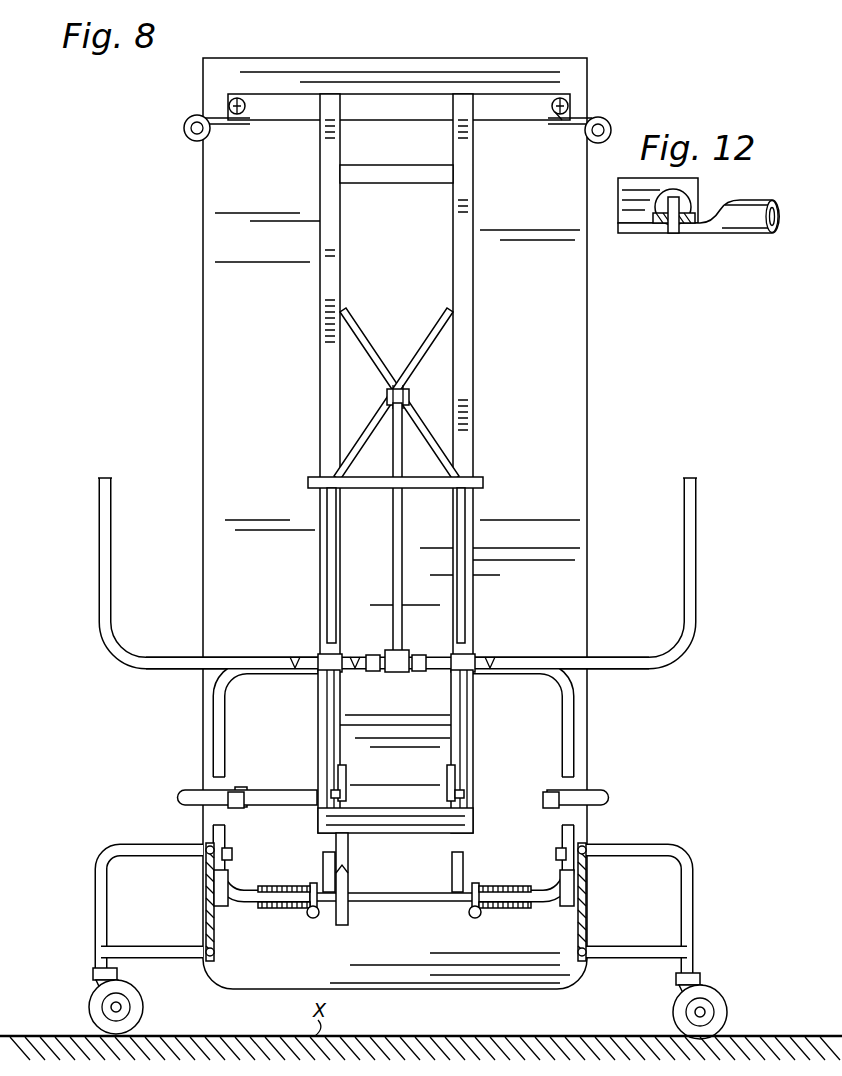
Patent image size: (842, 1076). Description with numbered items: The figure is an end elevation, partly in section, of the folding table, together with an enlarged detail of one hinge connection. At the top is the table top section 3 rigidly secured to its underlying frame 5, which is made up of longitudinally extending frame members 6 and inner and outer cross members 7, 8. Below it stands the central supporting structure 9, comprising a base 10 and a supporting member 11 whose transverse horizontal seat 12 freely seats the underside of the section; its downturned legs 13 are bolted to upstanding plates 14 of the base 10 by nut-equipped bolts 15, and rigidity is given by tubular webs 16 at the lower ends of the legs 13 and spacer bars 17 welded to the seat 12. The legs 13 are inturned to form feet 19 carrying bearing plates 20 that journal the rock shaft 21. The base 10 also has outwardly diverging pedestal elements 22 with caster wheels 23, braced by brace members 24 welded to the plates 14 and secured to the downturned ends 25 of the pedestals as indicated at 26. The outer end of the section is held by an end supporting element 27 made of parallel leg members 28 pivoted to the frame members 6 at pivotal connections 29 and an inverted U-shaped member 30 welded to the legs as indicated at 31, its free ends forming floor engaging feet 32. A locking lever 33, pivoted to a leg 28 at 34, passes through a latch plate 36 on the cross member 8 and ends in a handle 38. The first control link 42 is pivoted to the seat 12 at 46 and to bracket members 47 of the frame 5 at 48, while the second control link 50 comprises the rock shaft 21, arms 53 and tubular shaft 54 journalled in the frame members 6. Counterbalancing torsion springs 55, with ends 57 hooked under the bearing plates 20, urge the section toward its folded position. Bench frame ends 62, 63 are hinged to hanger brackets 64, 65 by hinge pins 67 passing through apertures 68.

In FIG. 8, the table top section 3 is at (565, 392).
In FIG. 8, the underlying frame 5 is at (478, 353).
In FIG. 12, the underlying frame 5 is at (620, 232).
In FIG. 8, the longitudinally extending frame member 6 is at (322, 290).
In FIG. 8, the longitudinally inner cross member 7 is at (385, 175).
In FIG. 8, the longitudinally outer cross member 8 is at (405, 833).
In FIG. 8, the central supporting structure 9 is at (580, 760).
In FIG. 8, the base 10 is at (590, 925).
In FIG. 8, the supporting member 11 is at (545, 658).
In FIG. 8, the table supporting seat 12 is at (495, 660).
In FIG. 8, the leg 13 is at (212, 742).
In FIG. 8, the upstanding plate 14 is at (206, 918).
In FIG. 8, the nut-equipped bolt 15 is at (232, 855).
In FIG. 8, the tubular web 16 is at (228, 900).
In FIG. 8, the spacer bar 17 is at (375, 655).
In FIG. 8, the foot 19 is at (262, 902).
In FIG. 8, the bearing plate 20 is at (313, 883).
In FIG. 8, the rock shaft 21 is at (398, 901).
In FIG. 8, the pedestal element 22 is at (165, 845).
In FIG. 8, the caster wheel 23 is at (143, 1007).
In FIG. 8, the brace member 24 is at (170, 958).
In FIG. 8, the downturned end 25 is at (97, 917).
In FIG. 8, the brace securement 26 is at (105, 952).
In FIG. 8, the end supporting element 27 is at (175, 665).
In FIG. 8, the leg member 28 is at (332, 708).
In FIG. 8, the pivotal connection 29 is at (322, 806).
In FIG. 8, the U-shaped member 30 is at (210, 672).
In FIG. 8, the weld connection 31 is at (320, 657).
In FIG. 8, the floor engaging foot 32 is at (100, 480).
In FIG. 8, the locking lever 33 is at (345, 812).
In FIG. 8, the lever pivot 34 is at (347, 778).
In FIG. 8, the latch plate 36 is at (348, 838).
In FIG. 8, the handle 38 is at (348, 922).
In FIG. 8, the first control link 42 is at (393, 516).
In FIG. 8, the pivotal connection 46 is at (405, 650).
In FIG. 8, the bracket member 47 is at (437, 355).
In FIG. 8, the pivotal connection 48 is at (410, 398).
In FIG. 8, the second control link 50 is at (466, 545).
In FIG. 8, the arm 53 is at (462, 568).
In FIG. 8, the tubular shaft 54 is at (432, 490).
In FIG. 8, the torsion spring 55 is at (290, 908).
In FIG. 8, the spring end 57 is at (315, 917).
In FIG. 8, the inner end 62 is at (185, 128).
In FIG. 12, the inner end 62 is at (735, 234).
In FIG. 8, the outer end 63 is at (195, 790).
In FIG. 8, the hanger bracket 64 is at (233, 100).
In FIG. 12, the hanger bracket 64 is at (660, 222).
In FIG. 8, the hanger bracket 65 is at (240, 808).
In FIG. 8, the hinge pin 67 is at (558, 118).
In FIG. 12, the hinge pin 67 is at (673, 234).
In FIG. 12, the aperture 68 is at (703, 202).